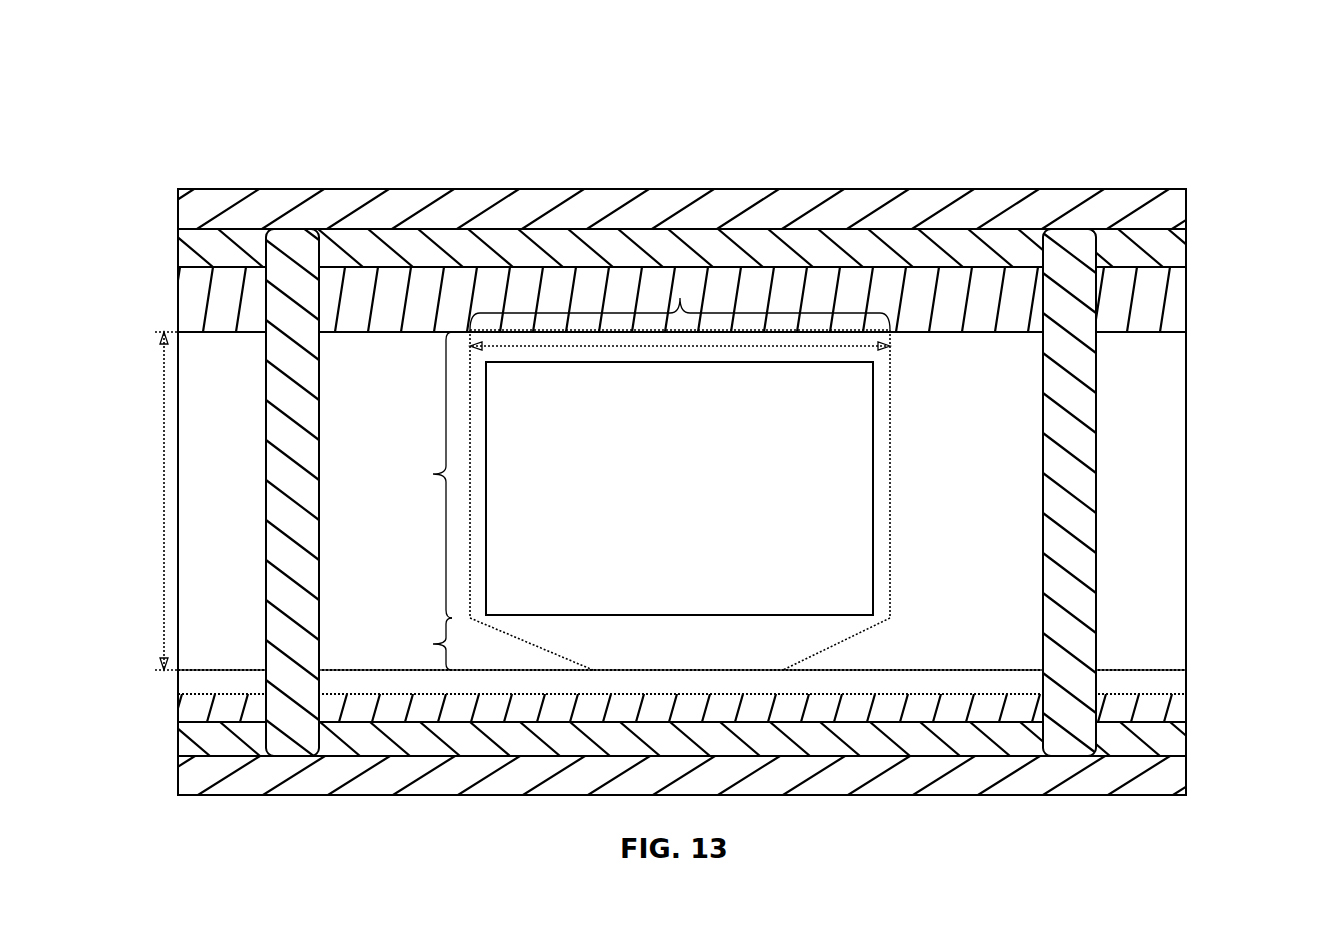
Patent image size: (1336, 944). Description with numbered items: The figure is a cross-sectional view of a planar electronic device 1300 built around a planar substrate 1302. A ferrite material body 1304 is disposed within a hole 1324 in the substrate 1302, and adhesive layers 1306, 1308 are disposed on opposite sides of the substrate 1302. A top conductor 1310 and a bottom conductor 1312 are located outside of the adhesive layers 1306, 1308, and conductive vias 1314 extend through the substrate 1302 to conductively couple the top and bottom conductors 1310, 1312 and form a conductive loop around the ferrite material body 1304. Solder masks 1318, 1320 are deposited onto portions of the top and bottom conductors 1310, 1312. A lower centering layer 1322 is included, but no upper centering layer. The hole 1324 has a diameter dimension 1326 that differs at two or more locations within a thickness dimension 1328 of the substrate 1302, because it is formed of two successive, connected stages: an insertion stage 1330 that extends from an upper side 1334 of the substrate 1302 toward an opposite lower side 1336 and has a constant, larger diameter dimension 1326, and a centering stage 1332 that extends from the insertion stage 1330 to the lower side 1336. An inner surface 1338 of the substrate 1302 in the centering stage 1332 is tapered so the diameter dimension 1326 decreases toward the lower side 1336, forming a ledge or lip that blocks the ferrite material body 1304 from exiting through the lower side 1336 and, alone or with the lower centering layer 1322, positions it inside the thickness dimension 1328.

The planar electronic device 1300 is at (1244, 125).
The planar substrate 1302 is at (1187, 468).
The ferrite material body 1304 is at (679, 488).
The adhesive layer 1306 is at (1187, 298).
The adhesive layer 1308 is at (1187, 710).
The top conductor 1310 is at (1187, 249).
The bottom conductor 1312 is at (1187, 743).
The conductive via 1314 is at (318, 353).
The solder mask 1318 is at (1187, 209).
The solder mask 1320 is at (1187, 780).
The lower centering layer 1322 is at (1187, 678).
The hole 1324 is at (680, 300).
The diameter dimension 1326 is at (683, 349).
The thickness dimension 1328 is at (163, 436).
The insertion stage 1330 is at (412, 475).
The centering stage 1332 is at (417, 644).
The upper side 1334 is at (926, 318).
The lower side 1336 is at (941, 686).
The inner surface 1338 is at (806, 652).